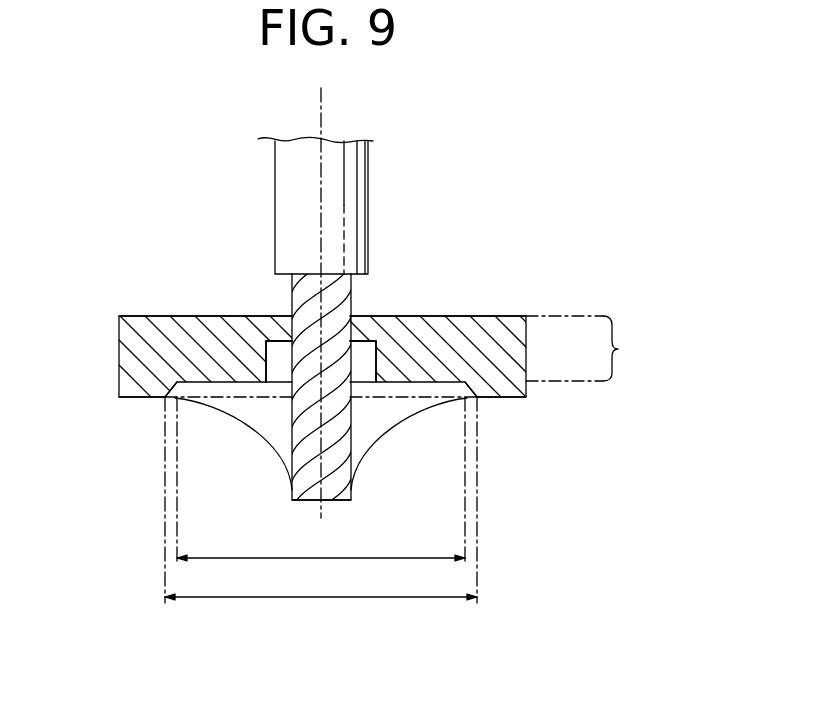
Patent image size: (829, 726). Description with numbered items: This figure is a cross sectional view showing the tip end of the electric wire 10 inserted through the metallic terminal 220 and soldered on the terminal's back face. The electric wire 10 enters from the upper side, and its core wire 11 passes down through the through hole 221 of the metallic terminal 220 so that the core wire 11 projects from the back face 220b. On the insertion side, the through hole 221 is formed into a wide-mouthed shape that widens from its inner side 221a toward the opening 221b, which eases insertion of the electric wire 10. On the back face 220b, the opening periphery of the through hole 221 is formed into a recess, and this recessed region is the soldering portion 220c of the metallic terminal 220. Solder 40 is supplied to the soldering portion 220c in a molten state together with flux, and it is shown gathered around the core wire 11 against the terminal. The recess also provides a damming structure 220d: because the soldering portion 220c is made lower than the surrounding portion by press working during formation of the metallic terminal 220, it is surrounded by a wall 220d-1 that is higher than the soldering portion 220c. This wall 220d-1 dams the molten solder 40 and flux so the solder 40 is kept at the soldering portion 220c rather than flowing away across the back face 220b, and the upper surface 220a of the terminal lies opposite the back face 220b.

The electric wire 10 is at (345, 141).
The core wire 11 is at (305, 501).
The solder 40 is at (247, 426).
The metallic terminal 220 is at (526, 352).
The upper surface of support plate 220a is at (188, 316).
The back face 220b is at (152, 396).
The soldering portion 220c is at (328, 559).
The damming structure 220d is at (328, 598).
The wall 220d-1 is at (167, 396).
The through hole 221 is at (618, 349).
The inner side 221a is at (376, 362).
The opening 221b is at (376, 316).